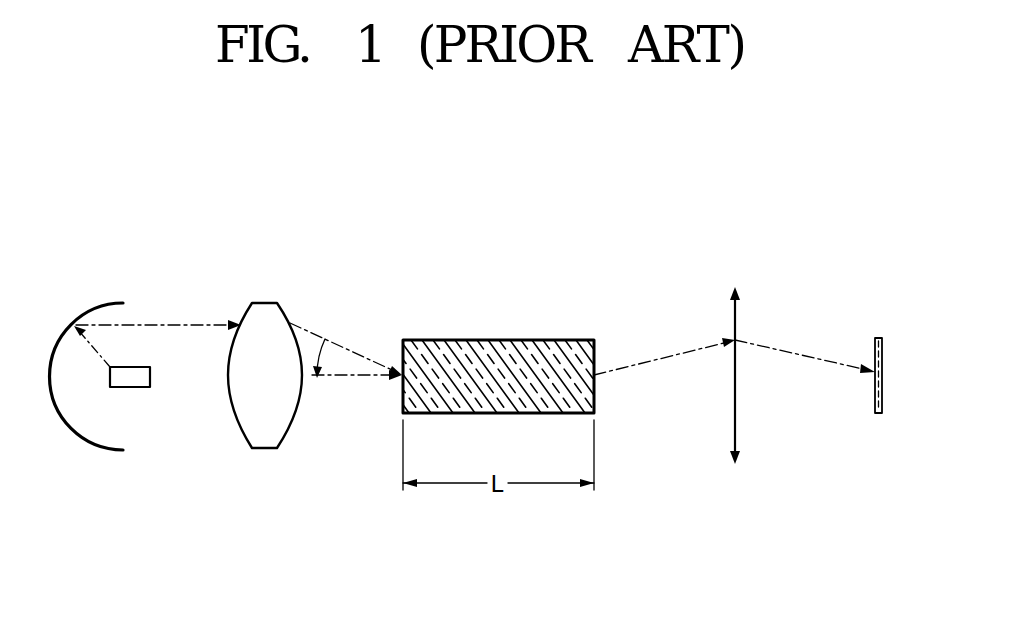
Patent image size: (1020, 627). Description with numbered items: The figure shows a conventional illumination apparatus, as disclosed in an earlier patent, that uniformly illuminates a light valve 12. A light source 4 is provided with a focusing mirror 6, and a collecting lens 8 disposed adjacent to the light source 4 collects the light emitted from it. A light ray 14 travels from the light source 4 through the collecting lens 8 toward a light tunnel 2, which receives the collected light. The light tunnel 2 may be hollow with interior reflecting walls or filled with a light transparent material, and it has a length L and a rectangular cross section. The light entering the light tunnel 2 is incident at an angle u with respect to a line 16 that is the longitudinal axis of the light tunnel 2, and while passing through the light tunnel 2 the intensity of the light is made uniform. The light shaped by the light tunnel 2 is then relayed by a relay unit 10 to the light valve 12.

The light tunnel 2 is at (564, 340).
The light source 4 is at (150, 377).
The focusing mirror 6 is at (107, 302).
The collecting lens 8 is at (265, 303).
The relay unit 10 is at (737, 408).
The light valve 12 is at (877, 338).
The light ray 14 is at (184, 323).
The line 16 is at (348, 378).